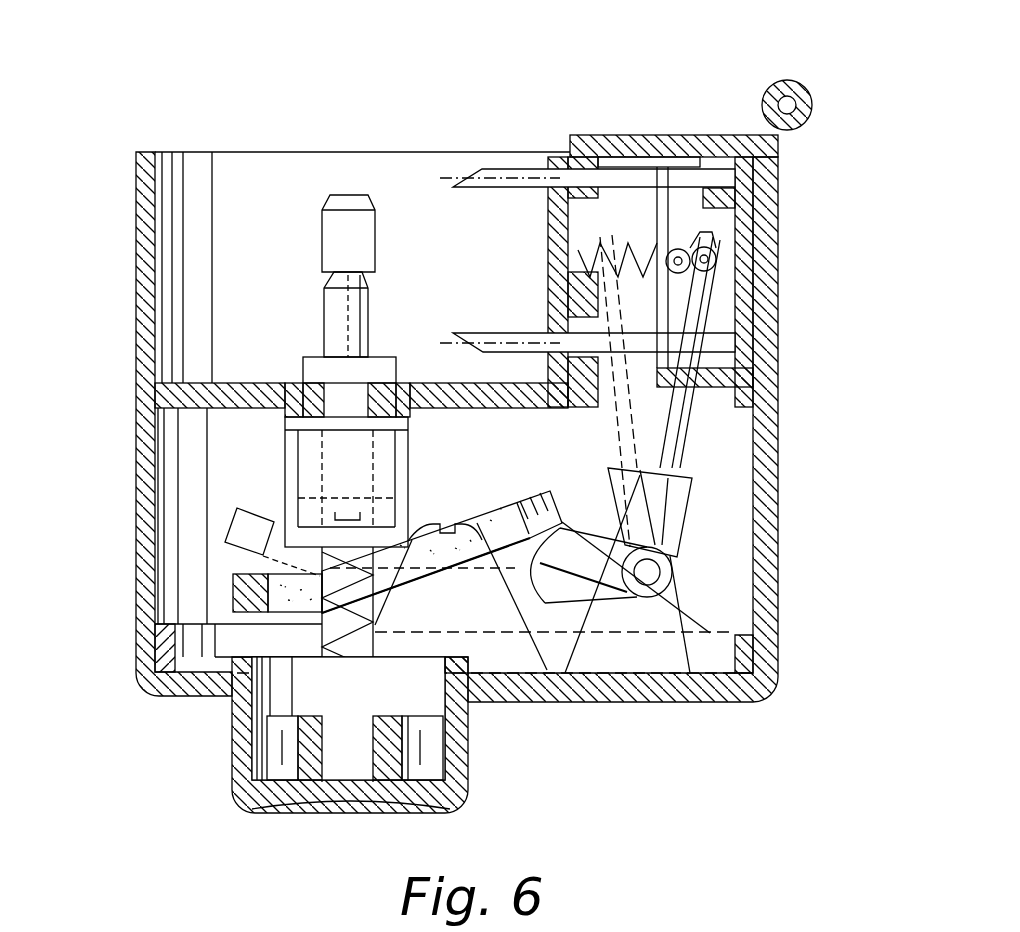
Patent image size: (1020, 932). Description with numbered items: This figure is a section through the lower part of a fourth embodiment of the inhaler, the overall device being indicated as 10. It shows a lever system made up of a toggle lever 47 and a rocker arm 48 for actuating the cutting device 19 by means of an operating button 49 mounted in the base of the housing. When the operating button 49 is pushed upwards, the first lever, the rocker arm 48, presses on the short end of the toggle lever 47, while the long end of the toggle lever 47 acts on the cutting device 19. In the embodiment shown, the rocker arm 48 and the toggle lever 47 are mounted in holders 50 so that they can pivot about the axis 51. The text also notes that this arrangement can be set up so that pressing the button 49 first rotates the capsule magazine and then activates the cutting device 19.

The flow switch housing 10 is at (283, 122).
The cutting device 19 is at (737, 255).
The toggle lever 47 is at (690, 422).
The rocker arm 48 is at (233, 595).
The operating button 49 is at (465, 755).
The holders 50 is at (467, 595).
The axis 51 is at (683, 555).